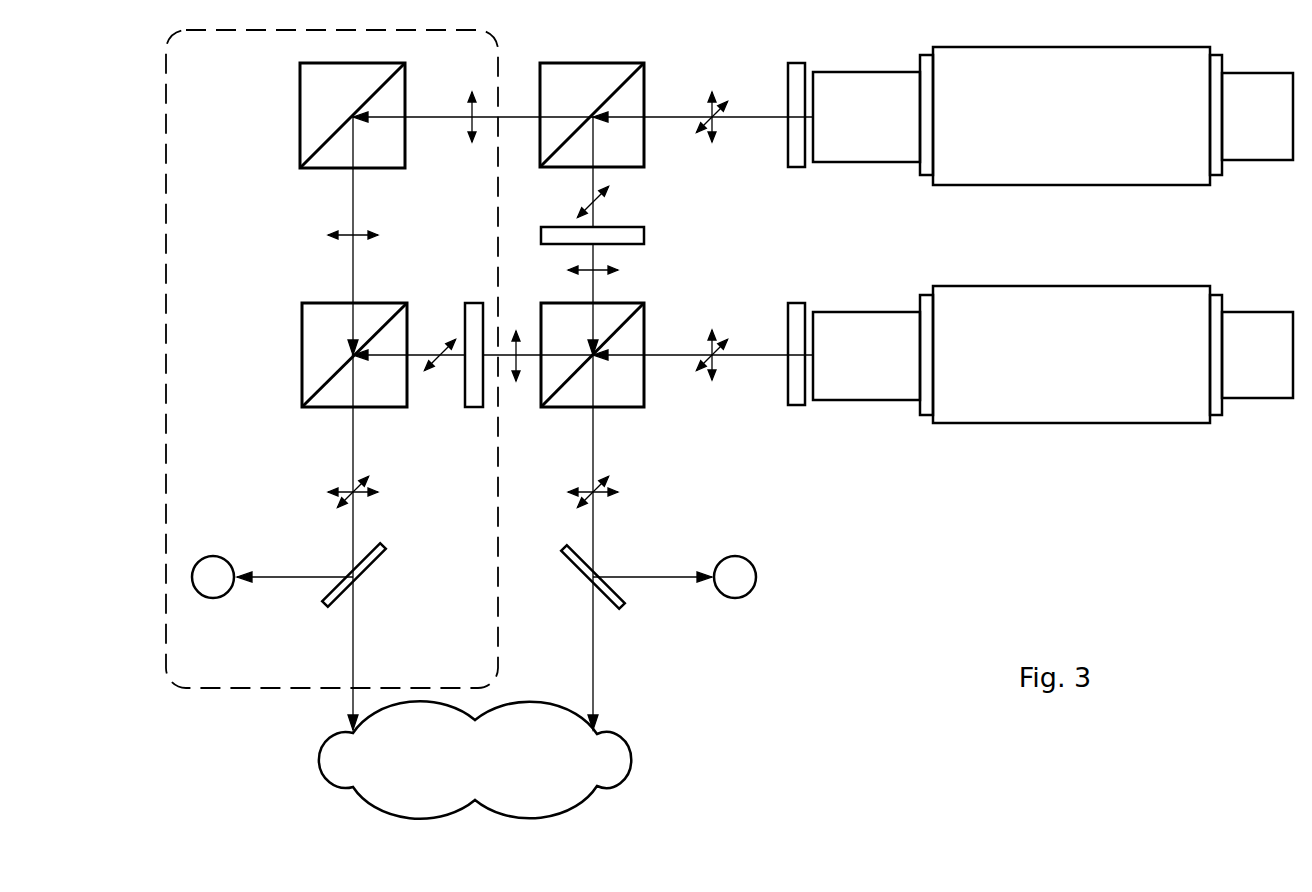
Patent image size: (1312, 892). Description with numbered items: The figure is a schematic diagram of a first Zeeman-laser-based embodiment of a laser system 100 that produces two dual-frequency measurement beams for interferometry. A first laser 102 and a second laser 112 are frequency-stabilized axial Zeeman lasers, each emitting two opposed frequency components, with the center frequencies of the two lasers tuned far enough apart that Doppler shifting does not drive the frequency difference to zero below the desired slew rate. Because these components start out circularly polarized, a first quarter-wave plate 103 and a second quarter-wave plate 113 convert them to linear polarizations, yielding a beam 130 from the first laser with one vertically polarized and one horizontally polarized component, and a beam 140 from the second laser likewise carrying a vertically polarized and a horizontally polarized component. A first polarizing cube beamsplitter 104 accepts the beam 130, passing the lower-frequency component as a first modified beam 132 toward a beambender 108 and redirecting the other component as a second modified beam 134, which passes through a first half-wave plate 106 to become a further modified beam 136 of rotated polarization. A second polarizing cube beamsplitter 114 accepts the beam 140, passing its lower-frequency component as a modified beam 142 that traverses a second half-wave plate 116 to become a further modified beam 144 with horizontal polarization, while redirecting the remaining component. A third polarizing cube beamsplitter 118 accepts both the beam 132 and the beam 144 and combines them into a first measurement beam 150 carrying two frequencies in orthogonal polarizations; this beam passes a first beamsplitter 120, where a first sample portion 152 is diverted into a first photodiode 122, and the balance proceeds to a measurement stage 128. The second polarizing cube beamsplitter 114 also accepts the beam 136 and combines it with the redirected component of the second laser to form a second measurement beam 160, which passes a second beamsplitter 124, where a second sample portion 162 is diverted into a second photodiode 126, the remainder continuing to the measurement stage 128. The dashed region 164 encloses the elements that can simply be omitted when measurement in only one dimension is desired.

The laser system 100 is at (729, 420).
The first laser 102 is at (1053, 116).
The first quarter-wave plate 103 is at (797, 168).
The first polarizing cube beamsplitter 104 is at (592, 115).
The first half-wave plate 106 is at (644, 243).
The beambender 108 is at (352, 115).
The second laser 112 is at (1053, 354).
The second quarter-wave plate 113 is at (797, 406).
The second polarizing cube beamsplitter 114 is at (592, 355).
The second half-wave plate 116 is at (473, 300).
The third polarizing cube beamsplitter 118 is at (354, 355).
The first beamsplitter 120 is at (323, 604).
The first photodiode 122 is at (213, 577).
The second beamsplitter 124 is at (623, 603).
The second photodiode 126 is at (735, 577).
The measurement stage 128 is at (475, 759).
The beam 130 is at (763, 117).
The first modified beam 132 is at (515, 117).
The second modified beam 134 is at (593, 210).
The further modified beam 136 is at (593, 287).
The beam 140 is at (763, 355).
The modified beam 142 is at (525, 358).
The further modified beam 144 is at (450, 358).
The first measurement beam 150 is at (353, 440).
The first sample portion 152 is at (293, 577).
The second measurement beam 160 is at (593, 440).
The second sample portion 162 is at (655, 577).
The region 164 is at (332, 359).